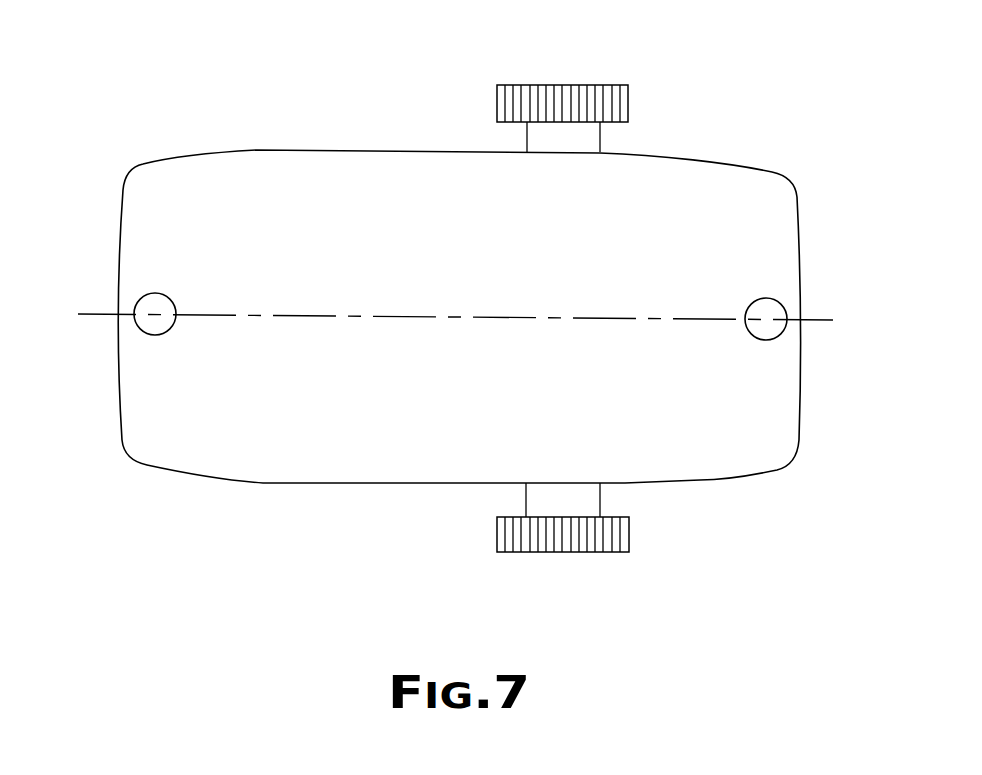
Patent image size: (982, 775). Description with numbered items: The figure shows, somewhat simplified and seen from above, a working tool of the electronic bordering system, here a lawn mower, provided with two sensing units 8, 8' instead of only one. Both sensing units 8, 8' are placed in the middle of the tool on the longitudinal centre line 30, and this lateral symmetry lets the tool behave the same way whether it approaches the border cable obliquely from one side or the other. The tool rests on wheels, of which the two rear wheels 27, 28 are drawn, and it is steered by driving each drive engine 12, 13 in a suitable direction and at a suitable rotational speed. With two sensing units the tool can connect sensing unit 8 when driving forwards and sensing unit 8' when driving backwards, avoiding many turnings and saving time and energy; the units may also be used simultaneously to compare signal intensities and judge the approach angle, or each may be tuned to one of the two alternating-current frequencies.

The sensing unit 8 is at (110, 334).
The sensing unit 8' is at (812, 340).
The drive engine 12 is at (535, 497).
The drive engine 13 is at (547, 137).
The rear wheel 27 is at (570, 540).
The rear wheel 28 is at (562, 92).
The longitudinal centre line 30 is at (818, 318).